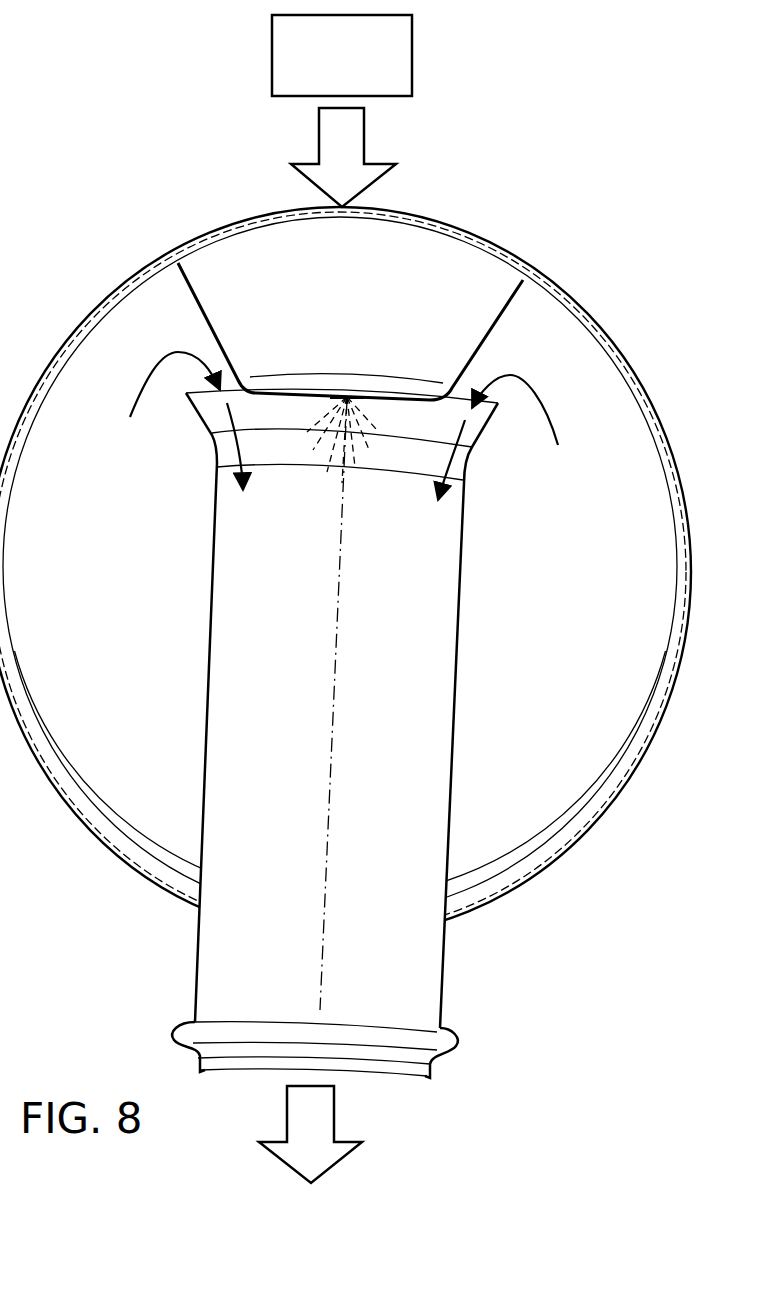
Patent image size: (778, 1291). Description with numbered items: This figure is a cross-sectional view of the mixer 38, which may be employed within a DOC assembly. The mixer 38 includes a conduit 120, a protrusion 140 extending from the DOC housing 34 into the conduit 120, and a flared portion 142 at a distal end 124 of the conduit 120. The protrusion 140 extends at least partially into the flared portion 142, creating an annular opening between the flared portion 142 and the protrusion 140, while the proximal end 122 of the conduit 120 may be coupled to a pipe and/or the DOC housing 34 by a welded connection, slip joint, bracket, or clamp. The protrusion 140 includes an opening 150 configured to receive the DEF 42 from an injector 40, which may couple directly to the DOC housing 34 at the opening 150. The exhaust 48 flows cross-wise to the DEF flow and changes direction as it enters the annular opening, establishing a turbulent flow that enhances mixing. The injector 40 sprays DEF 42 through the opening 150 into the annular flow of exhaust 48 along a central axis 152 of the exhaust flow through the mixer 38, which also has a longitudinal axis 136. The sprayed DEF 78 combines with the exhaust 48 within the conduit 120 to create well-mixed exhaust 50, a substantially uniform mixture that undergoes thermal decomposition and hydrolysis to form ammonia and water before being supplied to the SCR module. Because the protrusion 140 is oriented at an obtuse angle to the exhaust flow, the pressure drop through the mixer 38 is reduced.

The injector 40 is at (413, 52).
The DEF 42 is at (330, 159).
The DOC housing 34 is at (620, 795).
The mixer 38 is at (148, 777).
The protrusion 140 is at (485, 337).
The opening 150 is at (360, 397).
The sprayed DEF 78 is at (320, 413).
The exhaust 48 is at (172, 352).
The distal end 124 is at (230, 478).
The flared portion 142 is at (480, 438).
The conduit 120 is at (452, 787).
The central axis 152 is at (328, 762).
The longitudinal axis 136 is at (320, 985).
The proximal end 122 is at (433, 1067).
The well-mixed exhaust 50 is at (299, 1137).